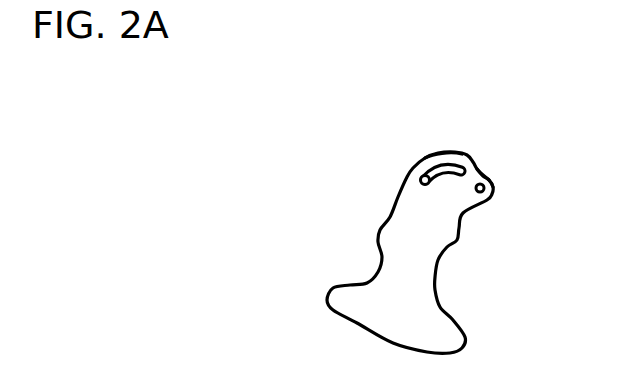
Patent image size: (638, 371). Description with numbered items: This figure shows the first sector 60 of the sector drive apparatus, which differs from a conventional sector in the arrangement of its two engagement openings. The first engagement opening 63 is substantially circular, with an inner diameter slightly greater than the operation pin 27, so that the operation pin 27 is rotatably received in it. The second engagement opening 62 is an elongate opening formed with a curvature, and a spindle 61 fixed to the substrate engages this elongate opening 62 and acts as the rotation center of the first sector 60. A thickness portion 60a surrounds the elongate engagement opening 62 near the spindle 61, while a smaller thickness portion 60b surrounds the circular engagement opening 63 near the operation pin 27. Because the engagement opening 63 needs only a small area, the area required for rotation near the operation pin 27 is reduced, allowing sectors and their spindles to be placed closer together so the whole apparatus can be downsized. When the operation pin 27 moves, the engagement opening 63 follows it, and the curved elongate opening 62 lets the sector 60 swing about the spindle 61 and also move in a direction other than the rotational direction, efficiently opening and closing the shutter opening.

The first sector 60 is at (398, 217).
The thickness portion 60a is at (448, 152).
The thickness portion 60b is at (486, 186).
The spindle 61 is at (424, 178).
The second engagement opening 62 is at (446, 170).
The operation pin 27 is at (485, 181).
The first engagement opening 63 is at (489, 197).